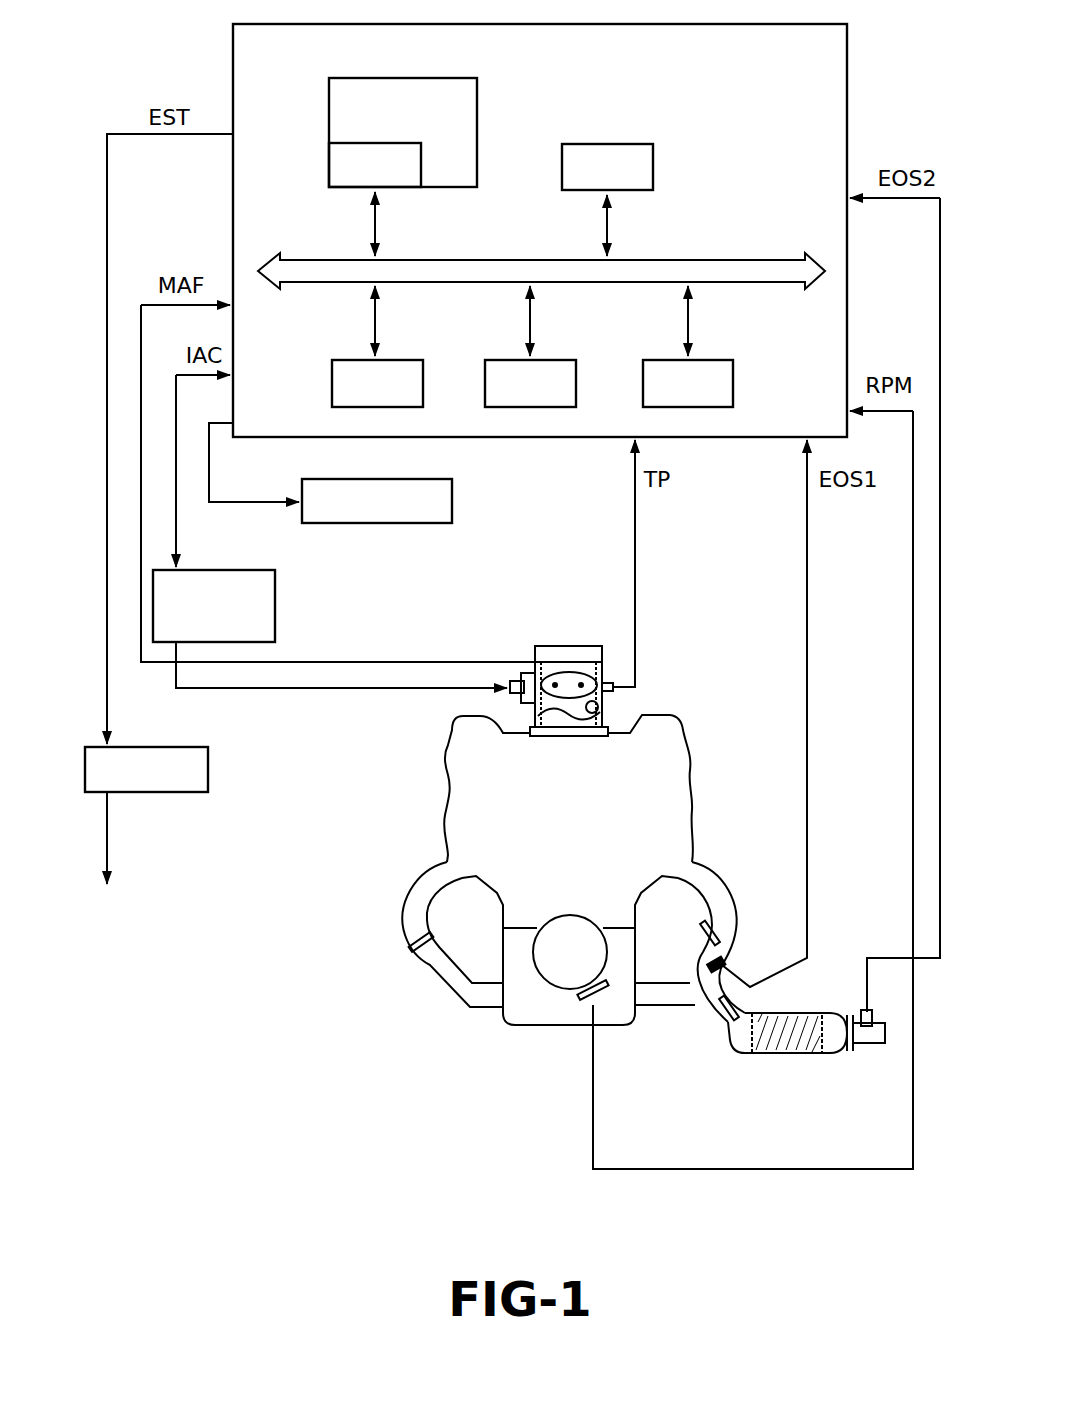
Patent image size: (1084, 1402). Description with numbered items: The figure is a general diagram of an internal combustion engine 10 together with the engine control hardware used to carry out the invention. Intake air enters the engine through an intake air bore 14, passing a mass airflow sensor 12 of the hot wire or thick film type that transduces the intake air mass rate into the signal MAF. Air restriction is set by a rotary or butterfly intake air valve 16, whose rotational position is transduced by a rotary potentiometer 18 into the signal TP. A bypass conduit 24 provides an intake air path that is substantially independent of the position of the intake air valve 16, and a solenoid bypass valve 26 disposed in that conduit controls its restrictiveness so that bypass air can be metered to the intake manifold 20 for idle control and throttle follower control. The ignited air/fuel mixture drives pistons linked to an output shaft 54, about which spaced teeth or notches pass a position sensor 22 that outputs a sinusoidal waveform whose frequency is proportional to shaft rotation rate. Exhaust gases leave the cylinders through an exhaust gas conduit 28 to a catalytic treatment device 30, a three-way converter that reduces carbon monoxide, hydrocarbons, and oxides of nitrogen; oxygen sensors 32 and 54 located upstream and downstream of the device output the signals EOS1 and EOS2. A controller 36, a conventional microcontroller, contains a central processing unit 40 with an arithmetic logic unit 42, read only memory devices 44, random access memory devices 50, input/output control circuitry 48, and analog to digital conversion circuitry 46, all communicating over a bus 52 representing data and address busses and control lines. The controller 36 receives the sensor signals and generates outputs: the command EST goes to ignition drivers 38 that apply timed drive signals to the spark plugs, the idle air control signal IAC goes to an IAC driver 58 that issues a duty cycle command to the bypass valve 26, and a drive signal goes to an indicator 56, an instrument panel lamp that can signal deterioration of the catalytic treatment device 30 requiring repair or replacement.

The internal combustion engine 10 is at (643, 917).
The mass airflow sensor 12 is at (562, 662).
The intake air bore 14 is at (598, 712).
The intake air valve 16 is at (572, 683).
The rotary potentiometer 18 is at (609, 687).
The intake manifold 20 is at (592, 732).
The position sensor 22 is at (597, 998).
The bypass conduit 24 is at (530, 671).
The bypass valve 26 is at (509, 683).
The exhaust gas conduit 28 is at (698, 972).
The catalytic treatment device 30 is at (793, 1058).
The oxygen sensor 32 is at (723, 958).
The controller 36 is at (840, 50).
The ignition drivers 38 is at (199, 750).
The central processing unit 40 is at (368, 86).
The arithmetic logic unit 42 is at (341, 165).
The read only memory devices 44 is at (634, 147).
The analog to digital conversion circuitry 46 is at (710, 362).
The input/output control circuitry 48 is at (548, 362).
The random access memory devices 50 is at (395, 362).
The bus 52 is at (812, 264).
The output shaft 54 is at (866, 1010).
The indicator 56 is at (415, 482).
The IAC driver 58 is at (268, 575).